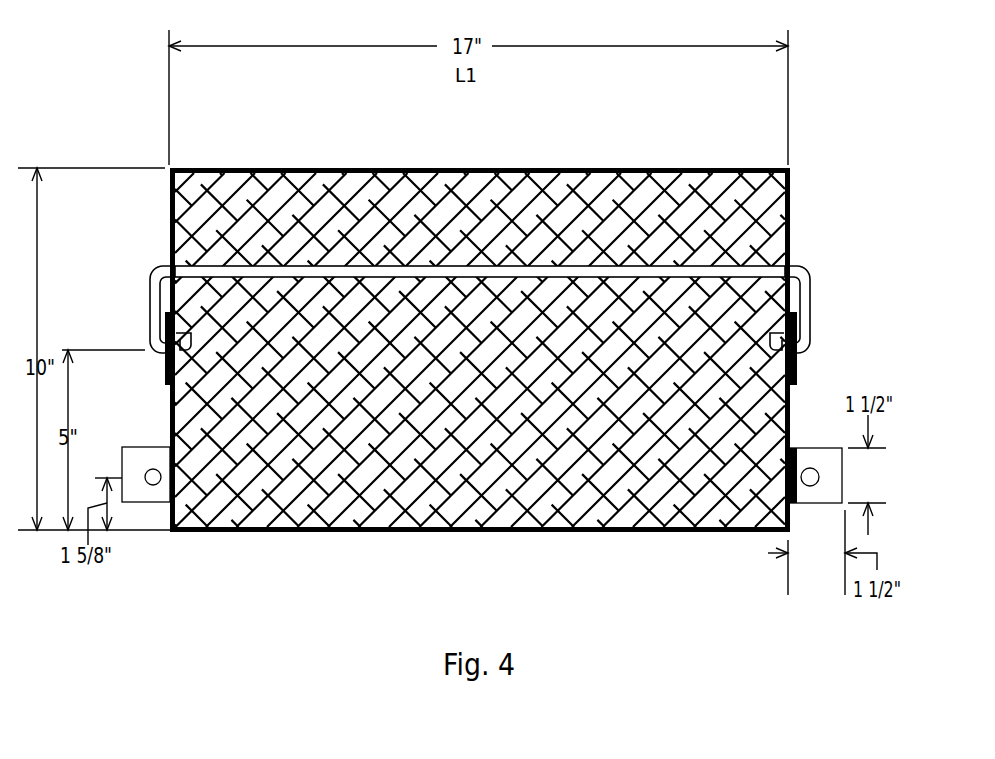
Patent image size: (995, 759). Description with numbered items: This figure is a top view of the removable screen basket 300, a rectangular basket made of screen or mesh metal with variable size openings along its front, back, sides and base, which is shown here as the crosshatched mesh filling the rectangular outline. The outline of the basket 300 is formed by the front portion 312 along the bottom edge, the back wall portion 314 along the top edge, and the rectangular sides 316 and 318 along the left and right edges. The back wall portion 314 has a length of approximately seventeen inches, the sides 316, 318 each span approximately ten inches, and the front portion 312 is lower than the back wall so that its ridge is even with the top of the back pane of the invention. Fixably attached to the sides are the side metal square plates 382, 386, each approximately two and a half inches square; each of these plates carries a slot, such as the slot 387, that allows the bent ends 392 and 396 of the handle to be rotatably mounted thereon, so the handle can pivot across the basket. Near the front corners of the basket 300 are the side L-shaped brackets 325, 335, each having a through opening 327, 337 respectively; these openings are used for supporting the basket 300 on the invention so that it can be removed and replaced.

The removable screen basket 300 is at (108, 90).
The front portion 312 is at (350, 534).
The back wall portion 314 is at (300, 166).
The rectangular side 316 is at (168, 211).
The rectangular side 318 is at (792, 213).
The side metal square plate 382 is at (812, 298).
The bent end of handle 392 is at (824, 344).
The bent end of handle 396 is at (163, 329).
The slot 387 is at (165, 357).
The side metal square plate 386 is at (172, 372).
The side L-shaped bracket 325 is at (822, 458).
The through opening 327 is at (812, 487).
The side L-shaped bracket 335 is at (135, 492).
The through opening 337 is at (157, 485).